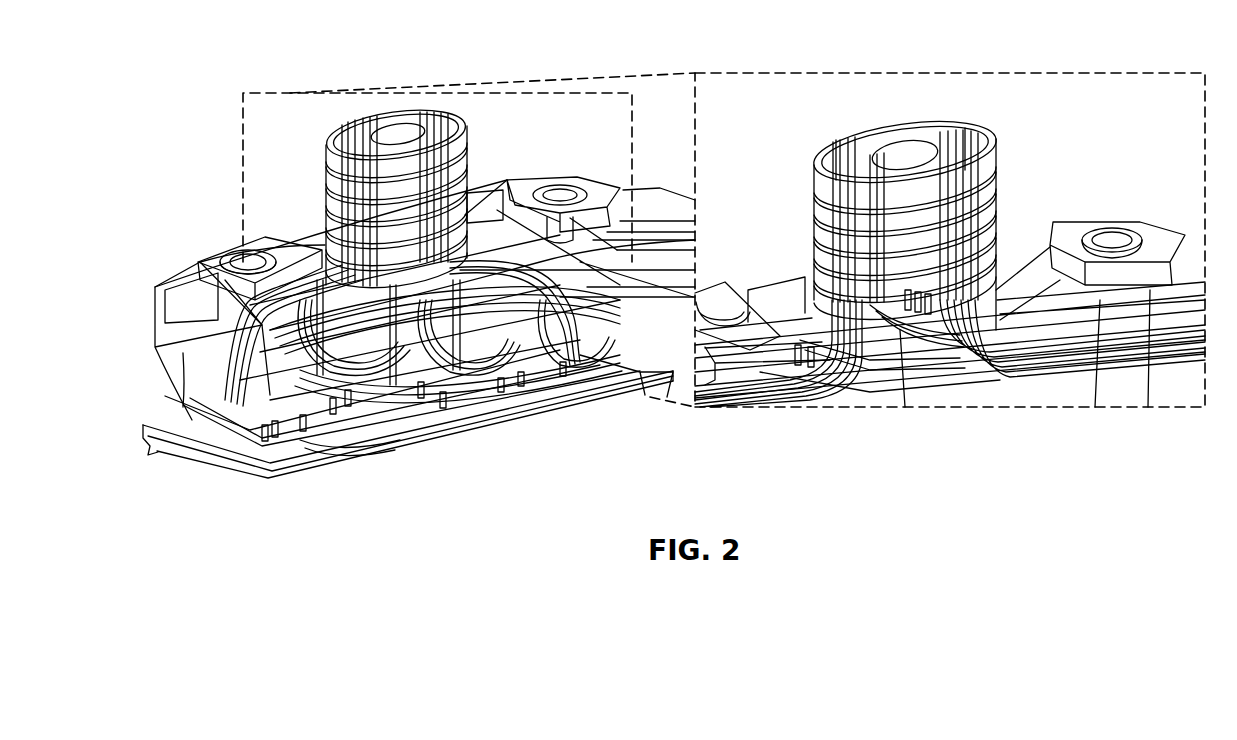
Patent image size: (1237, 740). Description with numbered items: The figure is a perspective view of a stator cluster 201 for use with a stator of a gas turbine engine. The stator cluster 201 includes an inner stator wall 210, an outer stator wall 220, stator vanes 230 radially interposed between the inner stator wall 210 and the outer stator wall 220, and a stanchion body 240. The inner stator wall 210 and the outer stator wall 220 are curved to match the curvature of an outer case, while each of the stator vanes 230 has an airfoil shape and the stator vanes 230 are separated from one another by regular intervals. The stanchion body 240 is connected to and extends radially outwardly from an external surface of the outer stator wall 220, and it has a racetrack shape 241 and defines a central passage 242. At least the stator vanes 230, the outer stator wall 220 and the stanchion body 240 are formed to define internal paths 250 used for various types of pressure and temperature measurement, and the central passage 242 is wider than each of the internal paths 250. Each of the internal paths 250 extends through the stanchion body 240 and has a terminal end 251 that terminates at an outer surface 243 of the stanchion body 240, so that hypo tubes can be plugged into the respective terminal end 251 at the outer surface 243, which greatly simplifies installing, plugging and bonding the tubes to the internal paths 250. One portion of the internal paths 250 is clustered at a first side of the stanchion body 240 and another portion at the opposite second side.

The stator cluster 201 is at (258, 478).
The inner stator wall 210 is at (344, 422).
The outer stator wall 220 is at (172, 275).
The stator vanes 230 is at (426, 386).
The stanchion body 240 is at (332, 144).
The racetrack shape 241 is at (837, 147).
The central passage 242 is at (890, 160).
The outer surface 243 is at (963, 128).
The internal paths 250 is at (487, 382).
The terminal end 251 is at (963, 128).